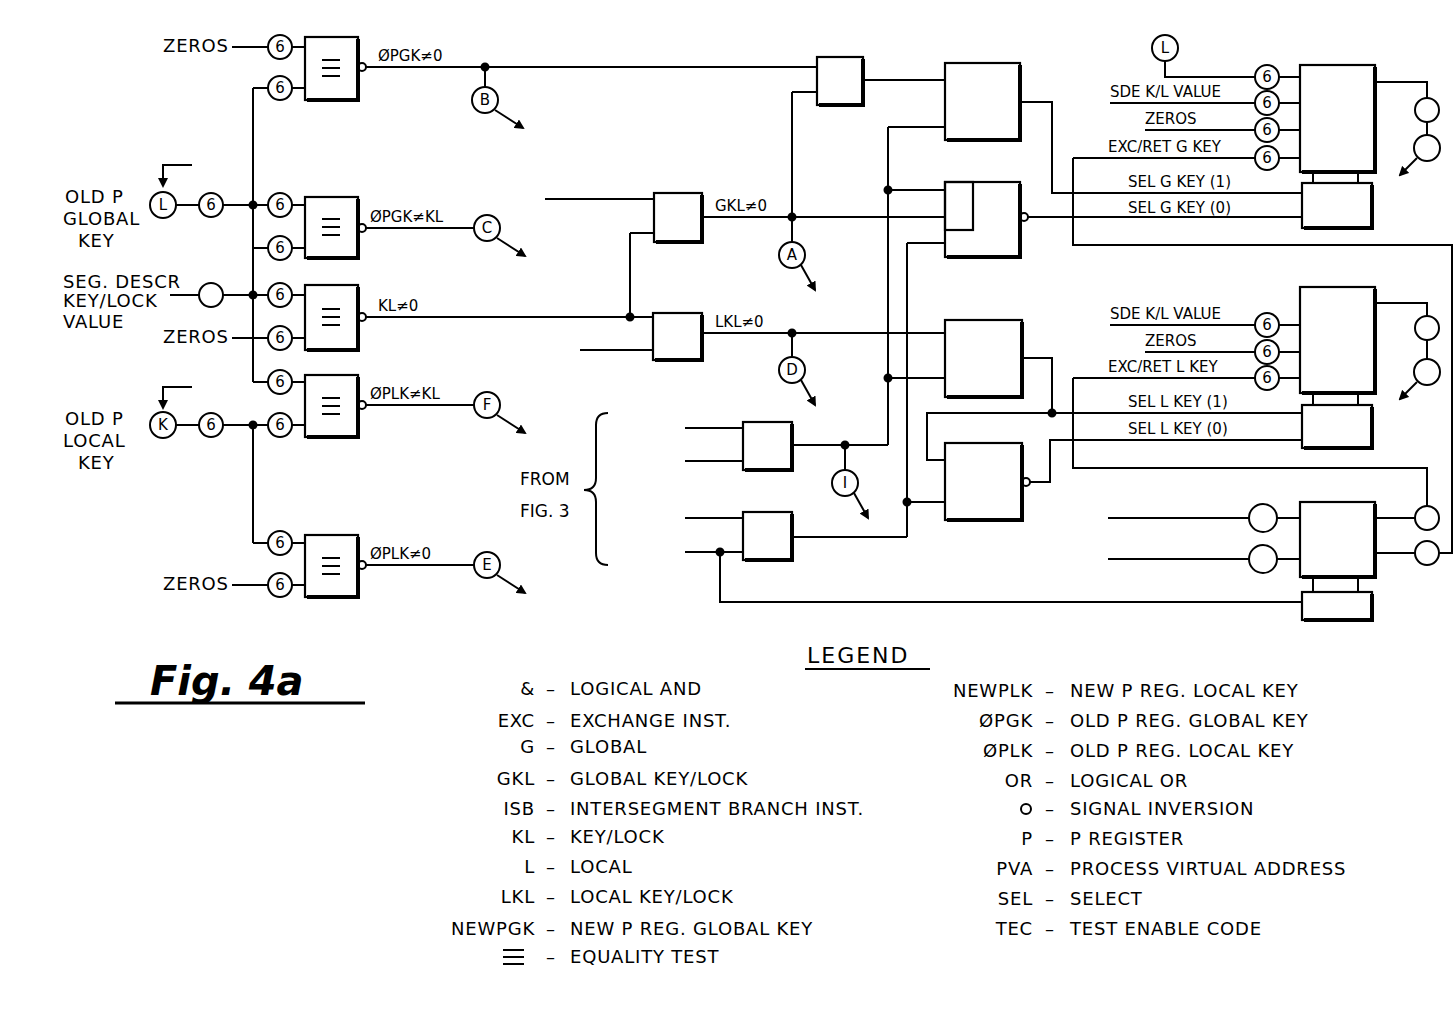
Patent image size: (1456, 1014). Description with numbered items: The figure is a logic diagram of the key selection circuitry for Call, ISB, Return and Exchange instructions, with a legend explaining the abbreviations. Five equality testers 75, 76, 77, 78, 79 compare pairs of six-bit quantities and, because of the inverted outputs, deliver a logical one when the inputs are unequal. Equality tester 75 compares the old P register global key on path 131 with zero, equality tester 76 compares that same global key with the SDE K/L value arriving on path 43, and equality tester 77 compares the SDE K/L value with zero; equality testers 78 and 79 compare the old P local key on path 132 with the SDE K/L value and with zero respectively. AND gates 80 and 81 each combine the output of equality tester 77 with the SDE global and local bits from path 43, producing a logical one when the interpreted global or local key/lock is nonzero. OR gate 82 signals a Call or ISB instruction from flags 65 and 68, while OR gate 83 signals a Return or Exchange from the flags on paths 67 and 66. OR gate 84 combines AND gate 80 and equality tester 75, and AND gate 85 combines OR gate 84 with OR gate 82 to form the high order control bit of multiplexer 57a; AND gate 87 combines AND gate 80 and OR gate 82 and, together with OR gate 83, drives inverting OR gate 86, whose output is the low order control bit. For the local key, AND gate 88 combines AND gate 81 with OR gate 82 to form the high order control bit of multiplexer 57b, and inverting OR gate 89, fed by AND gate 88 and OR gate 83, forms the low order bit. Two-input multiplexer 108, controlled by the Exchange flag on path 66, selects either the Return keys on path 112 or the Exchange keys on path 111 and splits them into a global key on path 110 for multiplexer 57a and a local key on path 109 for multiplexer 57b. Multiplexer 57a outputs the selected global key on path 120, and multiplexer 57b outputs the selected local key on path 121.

The data path 43 is at (238, 290).
The multiplexer 57a is at (1335, 65).
The multiplexer 57b is at (1330, 287).
The Call instruction flag 65 is at (718, 427).
The Exchange instruction flag path 66 is at (720, 562).
The Return instruction flag path 67 is at (708, 517).
The ISB instruction flag 68 is at (700, 461).
The equality tester 75 is at (348, 100).
The equality tester 76 is at (340, 197).
The equality tester 77 is at (345, 285).
The equality tester 78 is at (345, 437).
The equality tester 79 is at (340, 535).
The AND gate 80 is at (672, 193).
The AND gate 81 is at (672, 313).
The OR gate 82 is at (762, 422).
The OR gate 83 is at (760, 560).
The OR gate 84 is at (847, 57).
The AND gate 85 is at (975, 63).
The OR gate 86 is at (985, 182).
The AND gate 87 is at (953, 181).
The AND gate 88 is at (985, 320).
The OR gate 89 is at (985, 520).
The two-input multiplexer 108 is at (1385, 577).
The local key path 109 is at (1223, 468).
The global key path 110 is at (1452, 448).
The Exchange key path 111 is at (1128, 518).
The Return key path 112 is at (1130, 560).
The output path 120 is at (1420, 82).
The output path 121 is at (1403, 303).
The old P global key path 131 is at (237, 198).
The old P local key path 132 is at (240, 436).